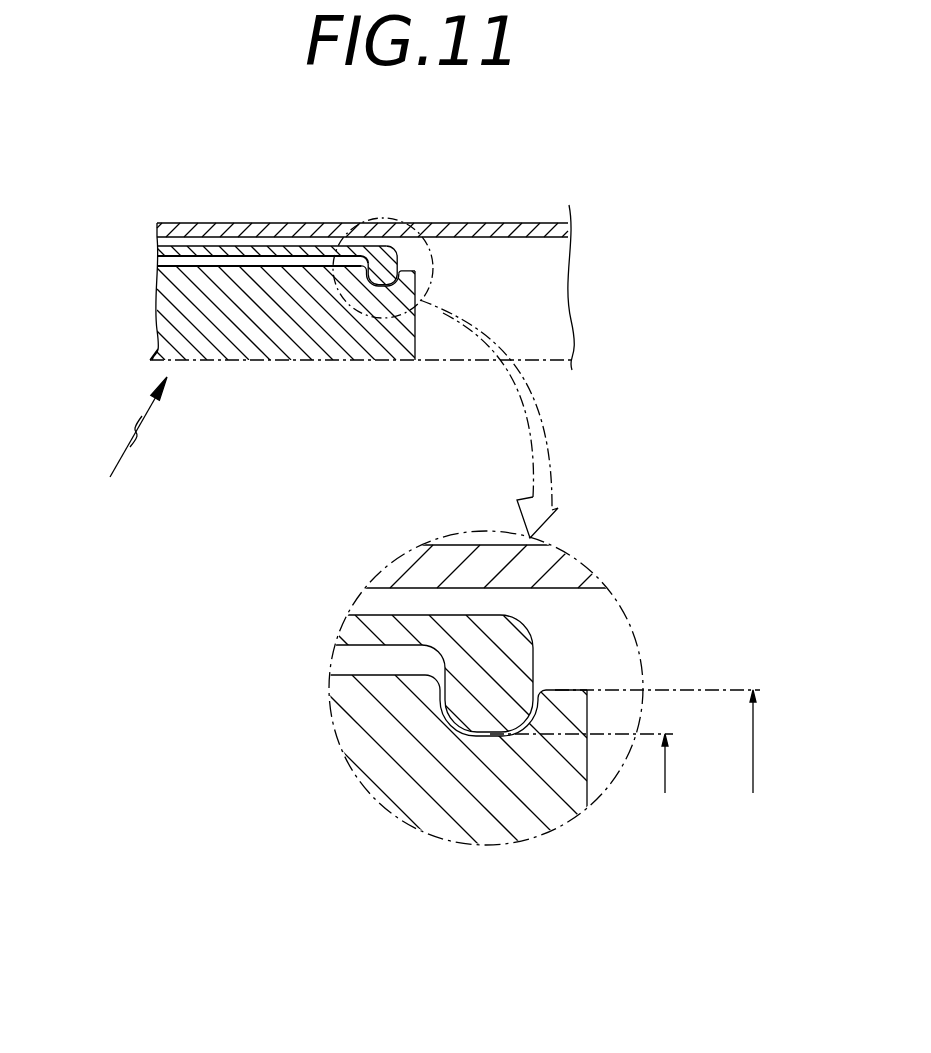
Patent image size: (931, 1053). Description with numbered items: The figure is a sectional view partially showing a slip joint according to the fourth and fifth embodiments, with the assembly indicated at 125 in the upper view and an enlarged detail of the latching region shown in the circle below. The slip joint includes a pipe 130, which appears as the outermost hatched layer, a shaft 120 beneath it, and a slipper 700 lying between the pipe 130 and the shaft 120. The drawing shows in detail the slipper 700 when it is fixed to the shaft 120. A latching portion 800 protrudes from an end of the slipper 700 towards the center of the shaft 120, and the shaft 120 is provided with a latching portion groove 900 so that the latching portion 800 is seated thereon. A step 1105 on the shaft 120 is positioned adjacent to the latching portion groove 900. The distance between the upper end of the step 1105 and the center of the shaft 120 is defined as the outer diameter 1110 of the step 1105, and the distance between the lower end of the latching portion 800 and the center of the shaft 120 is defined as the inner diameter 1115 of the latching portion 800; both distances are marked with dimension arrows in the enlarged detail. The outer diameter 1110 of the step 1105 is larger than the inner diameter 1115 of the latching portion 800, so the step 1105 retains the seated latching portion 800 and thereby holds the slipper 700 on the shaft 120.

The shaft 120 is at (233, 343).
The laminate structure 125 is at (119, 450).
The pipe 130 is at (312, 226).
The slipper 700 is at (233, 250).
The latching portion 800 is at (383, 260).
The latching portion groove 900 is at (377, 286).
The step 1105 is at (411, 270).
The outer diameter of the step 1110 is at (673, 763).
The inner diameter of the latching portion 1115 is at (592, 785).